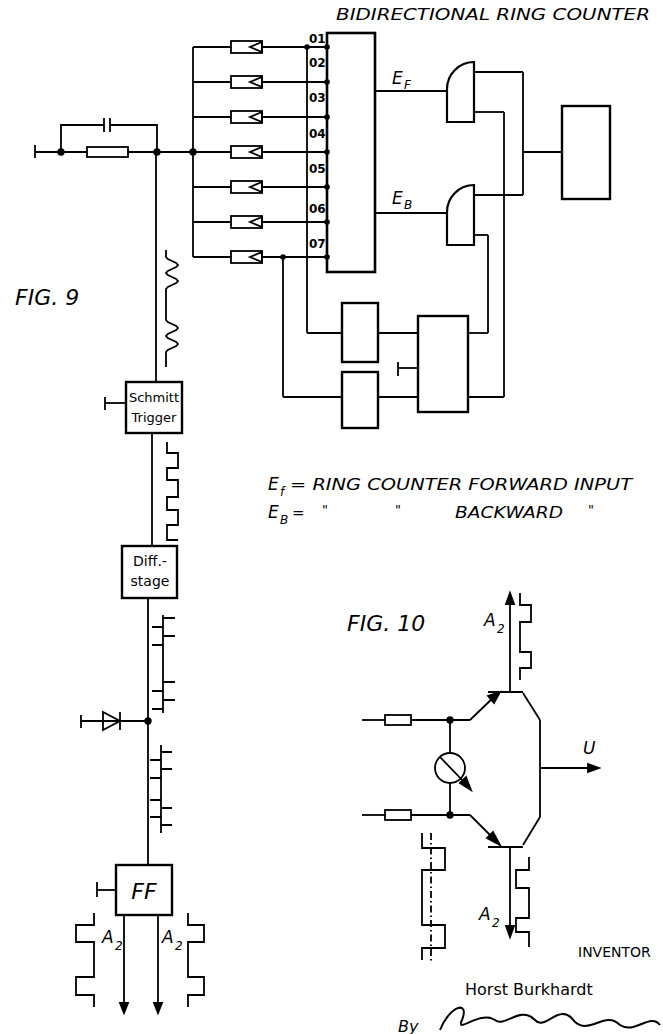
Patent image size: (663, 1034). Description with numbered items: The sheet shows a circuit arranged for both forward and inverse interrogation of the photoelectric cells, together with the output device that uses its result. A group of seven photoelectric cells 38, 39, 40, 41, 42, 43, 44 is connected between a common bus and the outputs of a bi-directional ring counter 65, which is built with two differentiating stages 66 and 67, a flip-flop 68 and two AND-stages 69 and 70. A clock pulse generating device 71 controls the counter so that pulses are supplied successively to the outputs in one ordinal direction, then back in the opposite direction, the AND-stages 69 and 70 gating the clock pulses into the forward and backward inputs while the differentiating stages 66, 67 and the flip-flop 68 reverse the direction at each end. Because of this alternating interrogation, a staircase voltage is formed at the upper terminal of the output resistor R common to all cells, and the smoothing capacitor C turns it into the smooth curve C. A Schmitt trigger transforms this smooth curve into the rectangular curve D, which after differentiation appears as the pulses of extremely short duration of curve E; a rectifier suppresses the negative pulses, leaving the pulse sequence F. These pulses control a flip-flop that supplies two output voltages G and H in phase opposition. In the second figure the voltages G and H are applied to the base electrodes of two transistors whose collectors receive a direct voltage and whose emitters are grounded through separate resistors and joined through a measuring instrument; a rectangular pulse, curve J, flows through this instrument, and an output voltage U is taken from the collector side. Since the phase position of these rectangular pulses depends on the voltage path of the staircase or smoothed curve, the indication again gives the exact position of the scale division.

In FIG. 9, the diode 38 is at (244, 46).
In FIG. 9, the diode 39 is at (244, 81).
In FIG. 9, the diode 40 is at (244, 116).
In FIG. 9, the diode 41 is at (244, 151).
In FIG. 9, the diode 42 is at (244, 186).
In FIG. 9, the diode 43 is at (244, 221).
In FIG. 9, the diode 44 is at (244, 256).
In FIG. 9, the bi-directional ring counter 65 is at (370, 250).
In FIG. 9, the differentiating stage 66 is at (342, 342).
In FIG. 9, the differentiating stage 67 is at (342, 412).
In FIG. 9, the flip-flop 68 is at (440, 403).
In FIG. 9, the AND-stage 69 is at (463, 102).
In FIG. 9, the AND-stage 70 is at (463, 225).
In FIG. 9, the clock pulse generating device 71 is at (590, 192).
In FIG. 9, the output resistor R is at (107, 164).
In FIG. 9, the smoothing capacitor / smoothed curve C is at (109, 124).
In FIG. 9, the rectangular curve D is at (175, 492).
In FIG. 9, the differentiated pulses E is at (168, 655).
In FIG. 9, the rectified pulse sequence F is at (166, 787).
In FIG. 9, the flip-flop output voltage G is at (196, 958).
In FIG. 10, the flip-flop output voltage G is at (527, 637).
In FIG. 9, the flip-flop output voltage H is at (90, 960).
In FIG. 10, the flip-flop output voltage H is at (532, 905).
In FIG. 10, the rectangular pulse through measuring instrument J is at (457, 767).
In FIG. 10, the output voltage U is at (569, 768).